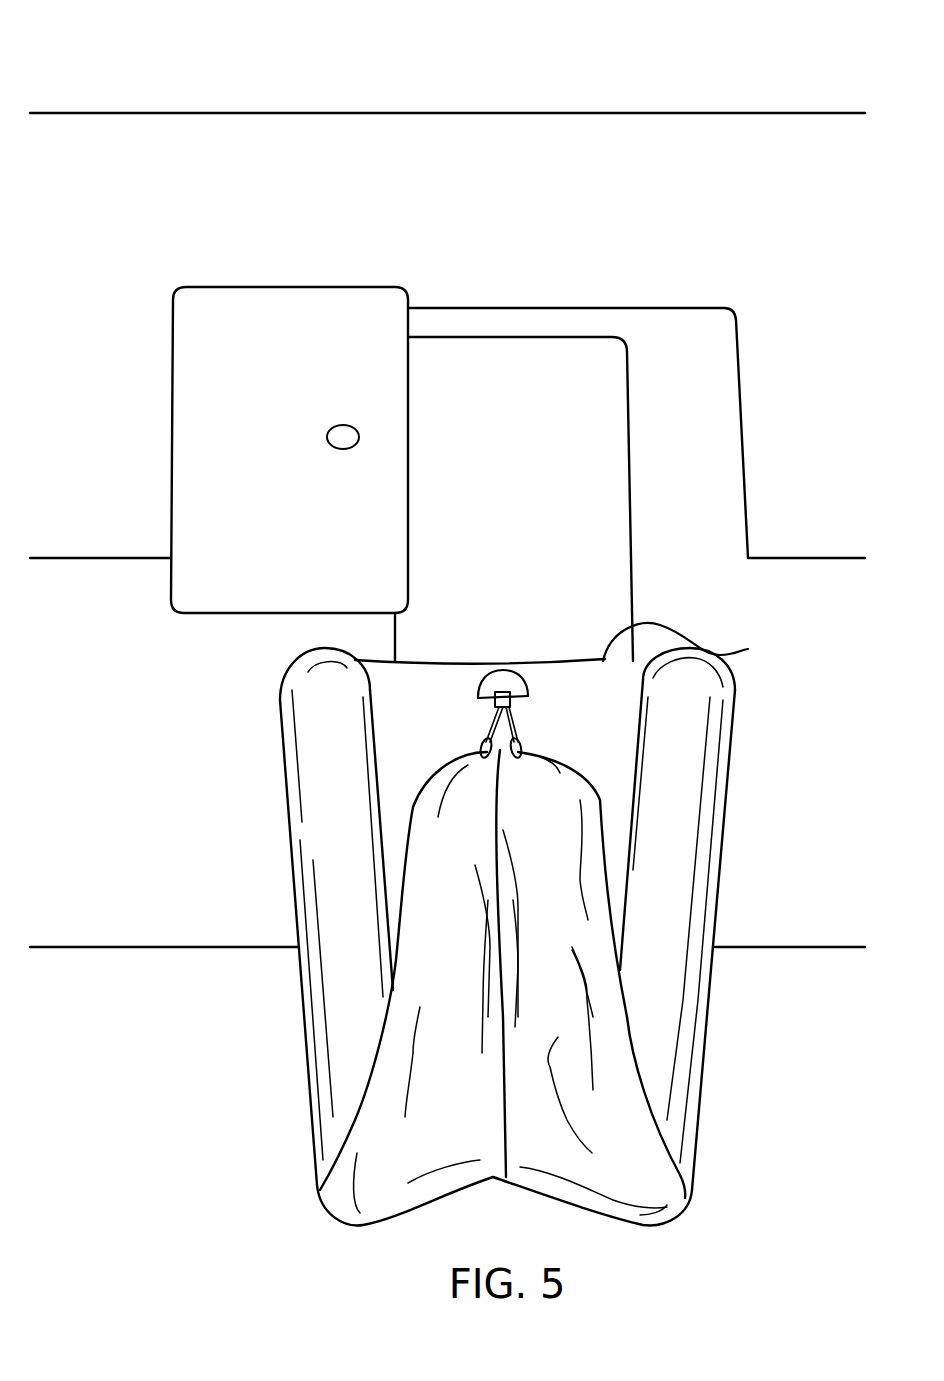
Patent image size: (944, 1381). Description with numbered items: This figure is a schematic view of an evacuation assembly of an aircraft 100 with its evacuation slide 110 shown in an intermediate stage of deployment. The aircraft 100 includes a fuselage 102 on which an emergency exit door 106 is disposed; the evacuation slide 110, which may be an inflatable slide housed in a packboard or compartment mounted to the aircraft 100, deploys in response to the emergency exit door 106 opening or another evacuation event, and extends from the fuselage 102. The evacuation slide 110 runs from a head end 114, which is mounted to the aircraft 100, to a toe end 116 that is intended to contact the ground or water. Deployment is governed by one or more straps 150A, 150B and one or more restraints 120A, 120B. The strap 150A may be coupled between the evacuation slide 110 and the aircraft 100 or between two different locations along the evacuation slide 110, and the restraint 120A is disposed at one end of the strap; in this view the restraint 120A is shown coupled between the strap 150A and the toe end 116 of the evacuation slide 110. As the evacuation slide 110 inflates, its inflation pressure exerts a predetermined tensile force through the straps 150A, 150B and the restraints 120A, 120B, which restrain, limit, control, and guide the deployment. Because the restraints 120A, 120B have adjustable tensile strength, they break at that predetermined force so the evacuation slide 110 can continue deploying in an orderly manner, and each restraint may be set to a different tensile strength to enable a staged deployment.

The aircraft 100 is at (166, 81).
The fuselage 102 is at (848, 350).
The emergency exit door 106 is at (206, 480).
The evacuation slide 110 is at (440, 936).
The head end 114 is at (696, 642).
The toe end 116 is at (592, 782).
The restraint 120A is at (481, 744).
The restraint 120B is at (521, 745).
The strap 150A is at (496, 728).
The strap 150B is at (512, 726).